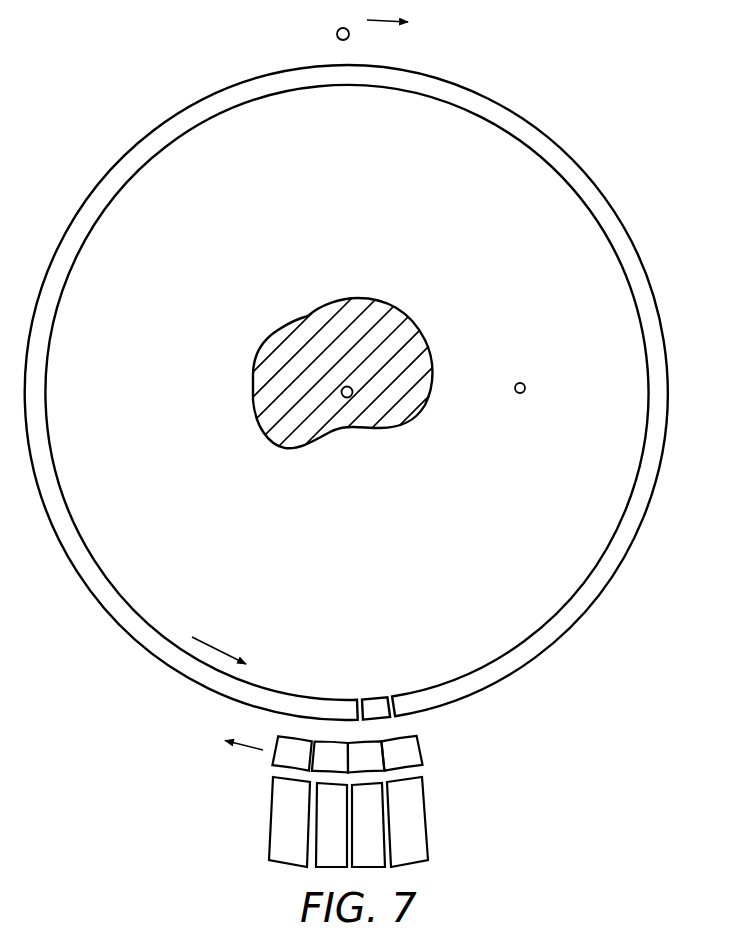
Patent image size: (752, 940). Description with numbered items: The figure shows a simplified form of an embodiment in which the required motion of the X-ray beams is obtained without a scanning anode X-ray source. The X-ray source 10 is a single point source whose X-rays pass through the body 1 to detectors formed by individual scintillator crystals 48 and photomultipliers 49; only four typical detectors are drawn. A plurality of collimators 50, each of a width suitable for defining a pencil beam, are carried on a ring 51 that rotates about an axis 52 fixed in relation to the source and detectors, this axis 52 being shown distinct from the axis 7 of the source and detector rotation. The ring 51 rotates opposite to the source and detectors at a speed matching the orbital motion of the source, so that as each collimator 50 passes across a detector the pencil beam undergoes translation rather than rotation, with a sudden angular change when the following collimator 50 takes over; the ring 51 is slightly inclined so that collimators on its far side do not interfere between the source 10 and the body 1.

The body 1 is at (433, 327).
The axis 7 is at (514, 389).
The X-ray source 10 is at (349, 36).
The scintillator crystals 48 is at (421, 752).
The photomultipliers 49 is at (427, 820).
The collimator 50 is at (349, 697).
The ring 51 is at (182, 674).
The axis 52 is at (349, 398).